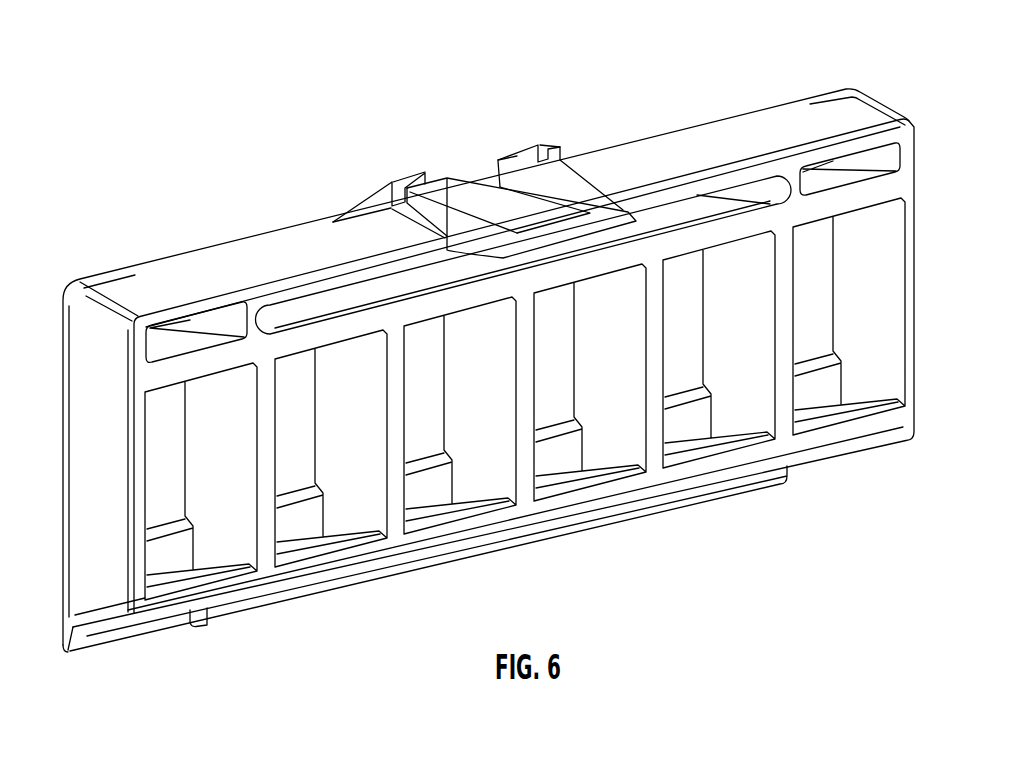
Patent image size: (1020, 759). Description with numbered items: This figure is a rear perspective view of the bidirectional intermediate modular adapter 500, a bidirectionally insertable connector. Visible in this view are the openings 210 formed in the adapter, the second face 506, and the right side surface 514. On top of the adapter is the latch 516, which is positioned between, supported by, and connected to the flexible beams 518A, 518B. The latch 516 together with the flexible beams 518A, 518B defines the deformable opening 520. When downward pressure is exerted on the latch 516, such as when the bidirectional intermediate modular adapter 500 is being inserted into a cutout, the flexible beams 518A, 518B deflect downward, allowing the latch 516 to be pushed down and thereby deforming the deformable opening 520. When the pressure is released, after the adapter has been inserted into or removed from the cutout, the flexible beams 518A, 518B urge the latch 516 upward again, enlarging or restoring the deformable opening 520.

The bidirectional intermediate modular adapter 500 is at (764, 498).
The second face 506 is at (867, 428).
The right side surface 514 is at (107, 573).
The latch 516 is at (446, 158).
The flexible beam 518A is at (621, 180).
The flexible beam 518B is at (377, 233).
The deformable opening 520 is at (663, 215).
The openings 210 is at (293, 448).